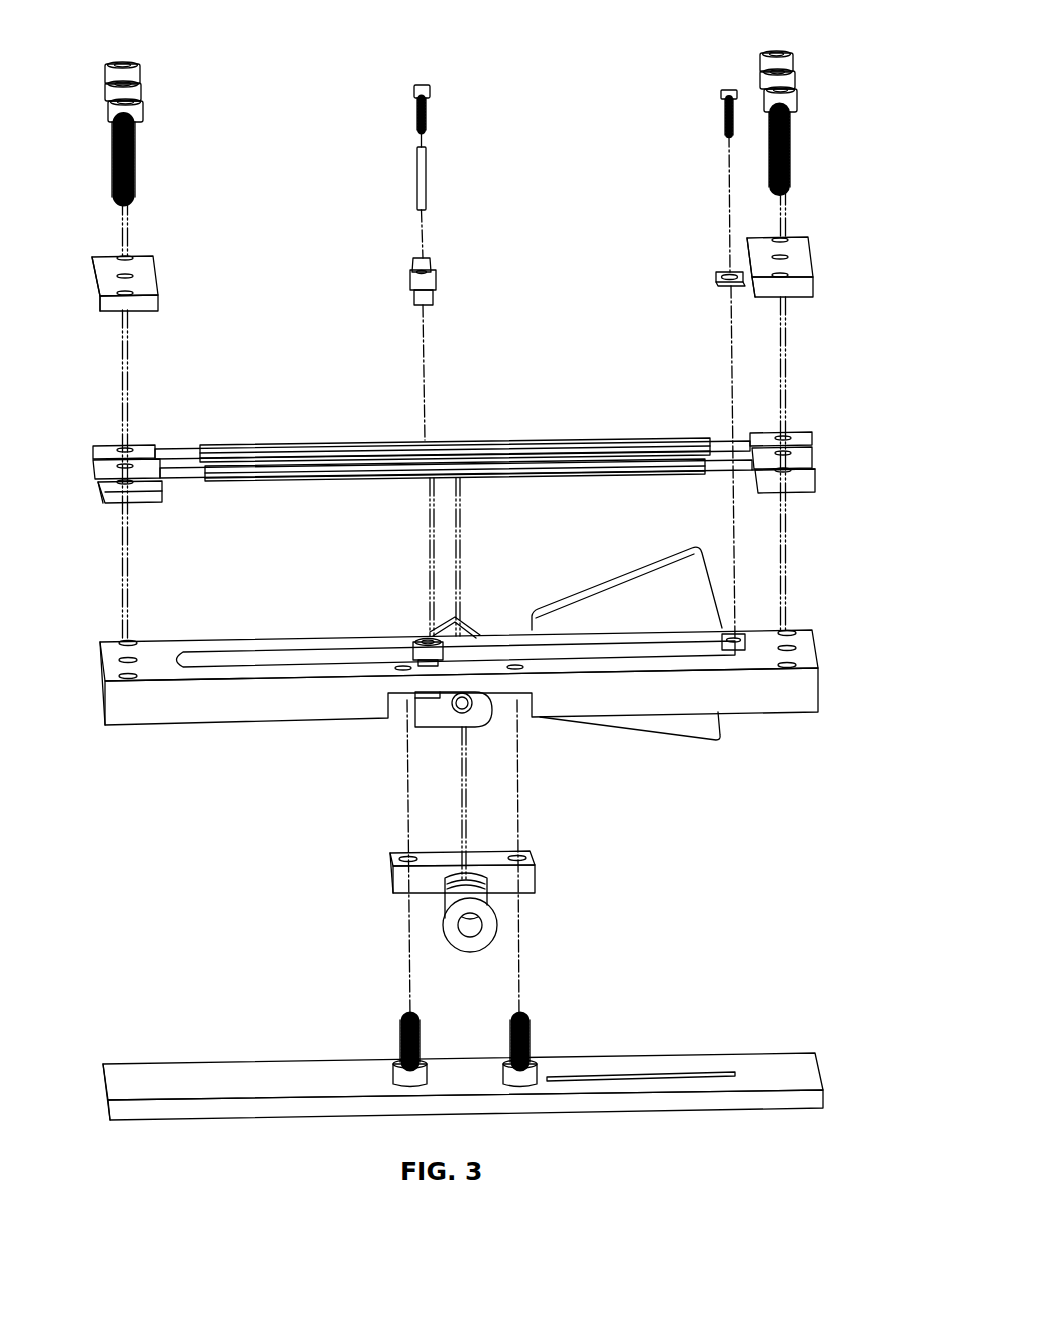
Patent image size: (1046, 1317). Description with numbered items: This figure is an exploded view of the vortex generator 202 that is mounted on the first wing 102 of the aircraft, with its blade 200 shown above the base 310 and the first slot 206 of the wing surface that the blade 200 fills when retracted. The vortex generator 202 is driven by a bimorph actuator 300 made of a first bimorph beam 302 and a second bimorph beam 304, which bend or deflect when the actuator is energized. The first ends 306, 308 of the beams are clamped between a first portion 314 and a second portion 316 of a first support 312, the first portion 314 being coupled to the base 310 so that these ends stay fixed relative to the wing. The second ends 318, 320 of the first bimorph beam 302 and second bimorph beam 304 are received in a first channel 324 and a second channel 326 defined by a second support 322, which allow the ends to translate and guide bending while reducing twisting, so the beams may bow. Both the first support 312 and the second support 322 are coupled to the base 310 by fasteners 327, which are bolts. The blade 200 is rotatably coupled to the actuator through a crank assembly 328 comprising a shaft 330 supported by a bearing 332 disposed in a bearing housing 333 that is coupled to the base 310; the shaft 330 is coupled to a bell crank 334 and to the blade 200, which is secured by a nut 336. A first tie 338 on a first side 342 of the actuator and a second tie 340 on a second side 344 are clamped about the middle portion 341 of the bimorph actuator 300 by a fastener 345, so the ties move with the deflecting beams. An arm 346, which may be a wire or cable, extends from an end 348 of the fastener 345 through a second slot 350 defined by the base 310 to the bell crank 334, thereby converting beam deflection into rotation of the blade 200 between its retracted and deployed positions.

The first wing 102 is at (463, 1091).
The blade 200 is at (590, 605).
The vortex generator 202 is at (188, 876).
The first slot 206 is at (708, 1073).
The bimorph actuator 300 is at (457, 503).
The first bimorph beam 302 is at (318, 447).
The second bimorph beam 304 is at (530, 465).
The first end of first bimorph beam 306 is at (115, 448).
The first end of second bimorph beam 308 is at (108, 466).
The base 310 is at (459, 668).
The first support 312 is at (108, 262).
The first portion of first support 314 is at (120, 492).
The second portion of first support 316 is at (120, 300).
The second end of first bimorph beam 318 is at (765, 440).
The second end of second bimorph beam 320 is at (770, 470).
The second support 322 is at (805, 260).
The first channel 324 is at (802, 436).
The second channel 326 is at (805, 462).
The fasteners 327 is at (125, 63).
The crank assembly 328 is at (535, 940).
The shaft 330 is at (468, 880).
The bearing 332 is at (466, 945).
The bearing housing 333 is at (390, 873).
The bell crank 334 is at (448, 722).
The nut 336 is at (452, 620).
The first tie 338 is at (416, 262).
The second tie 340 is at (428, 642).
The middle portion of bimorph actuator 341 is at (442, 447).
The first side of bimorph actuator 342 is at (498, 442).
The second side of bimorph actuator 344 is at (337, 482).
The fastener 345 is at (416, 100).
The arm 346 is at (419, 180).
The end of fastener 348 is at (418, 130).
The second slot 350 is at (245, 657).